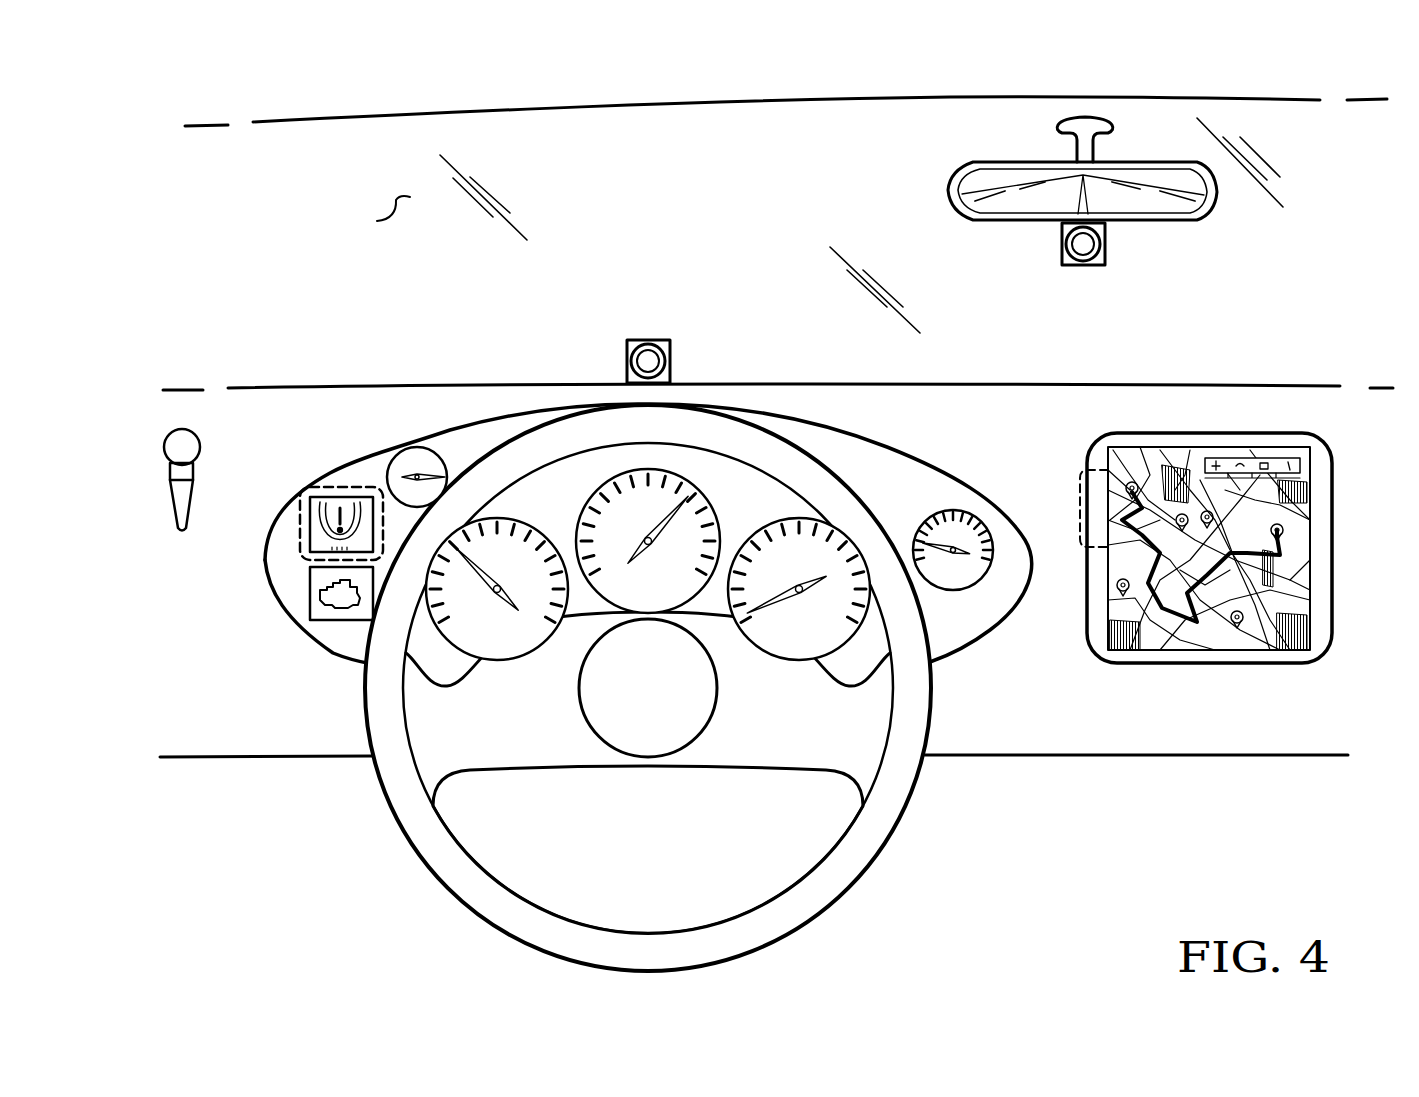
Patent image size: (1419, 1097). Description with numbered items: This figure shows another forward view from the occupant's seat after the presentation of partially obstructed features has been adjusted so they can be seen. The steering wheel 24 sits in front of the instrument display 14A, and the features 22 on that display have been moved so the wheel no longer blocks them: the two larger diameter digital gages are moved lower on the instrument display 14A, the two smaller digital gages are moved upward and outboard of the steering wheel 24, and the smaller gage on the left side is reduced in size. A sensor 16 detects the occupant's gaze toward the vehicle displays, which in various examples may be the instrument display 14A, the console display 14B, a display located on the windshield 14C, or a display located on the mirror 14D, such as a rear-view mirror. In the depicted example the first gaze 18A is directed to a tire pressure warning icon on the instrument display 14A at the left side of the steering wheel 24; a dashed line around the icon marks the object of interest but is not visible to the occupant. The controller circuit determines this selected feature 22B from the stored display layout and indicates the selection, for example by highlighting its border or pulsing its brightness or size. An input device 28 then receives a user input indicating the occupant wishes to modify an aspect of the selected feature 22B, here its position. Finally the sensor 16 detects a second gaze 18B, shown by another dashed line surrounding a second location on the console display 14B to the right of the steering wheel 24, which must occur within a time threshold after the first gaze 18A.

The instrument display 14A is at (447, 435).
The console display 14B is at (1159, 479).
The windshield 14C is at (396, 200).
The mirror 14D is at (967, 168).
The sensor 16 is at (648, 338).
The first gaze 18A is at (296, 482).
The second gaze 18B is at (1080, 480).
The features 22 is at (270, 625).
The selected feature 22B is at (332, 495).
The steering wheel 24 is at (430, 871).
The input device 28 is at (175, 432).